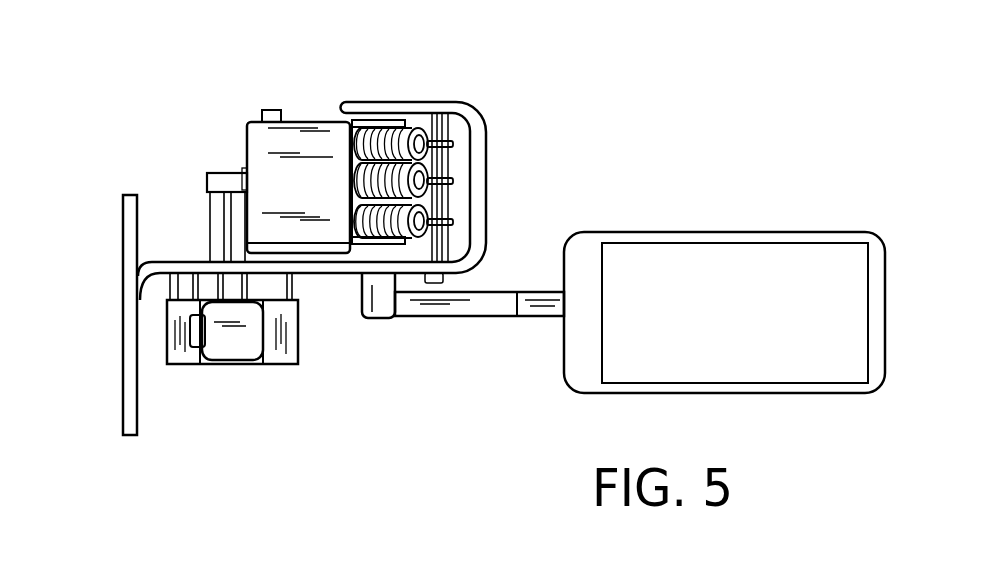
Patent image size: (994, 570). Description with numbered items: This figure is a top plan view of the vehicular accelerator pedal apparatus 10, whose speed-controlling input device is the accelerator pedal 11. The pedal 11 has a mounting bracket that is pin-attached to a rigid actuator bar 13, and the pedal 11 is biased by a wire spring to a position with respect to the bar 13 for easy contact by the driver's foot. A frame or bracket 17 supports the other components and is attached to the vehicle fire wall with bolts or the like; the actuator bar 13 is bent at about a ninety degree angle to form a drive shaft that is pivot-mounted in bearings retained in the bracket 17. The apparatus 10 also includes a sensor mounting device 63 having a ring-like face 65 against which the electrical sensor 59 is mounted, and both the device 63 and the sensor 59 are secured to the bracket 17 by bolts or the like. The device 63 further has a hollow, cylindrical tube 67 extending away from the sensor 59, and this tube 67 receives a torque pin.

The vehicular accelerator pedal apparatus 10 is at (297, 70).
The accelerator pedal 11 is at (755, 257).
The actuator bar 13 is at (543, 318).
The bracket 17 is at (133, 194).
The electrical sensor 59 is at (273, 364).
The sensor mounting device 63 is at (300, 290).
The ring-like face 65 is at (170, 298).
The hollow cylindrical tube 67 is at (210, 222).